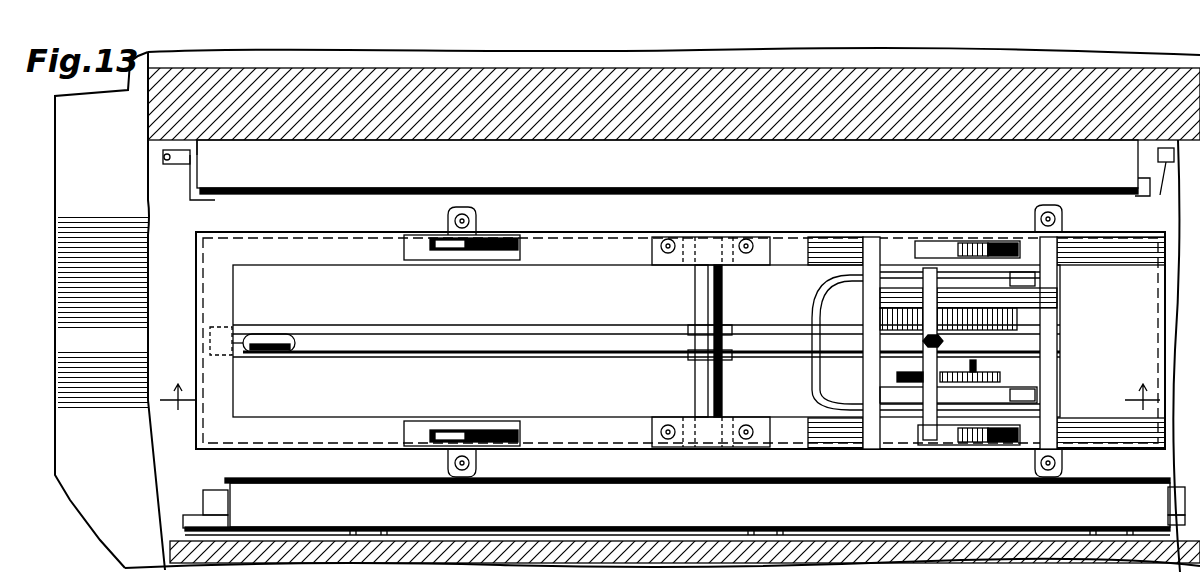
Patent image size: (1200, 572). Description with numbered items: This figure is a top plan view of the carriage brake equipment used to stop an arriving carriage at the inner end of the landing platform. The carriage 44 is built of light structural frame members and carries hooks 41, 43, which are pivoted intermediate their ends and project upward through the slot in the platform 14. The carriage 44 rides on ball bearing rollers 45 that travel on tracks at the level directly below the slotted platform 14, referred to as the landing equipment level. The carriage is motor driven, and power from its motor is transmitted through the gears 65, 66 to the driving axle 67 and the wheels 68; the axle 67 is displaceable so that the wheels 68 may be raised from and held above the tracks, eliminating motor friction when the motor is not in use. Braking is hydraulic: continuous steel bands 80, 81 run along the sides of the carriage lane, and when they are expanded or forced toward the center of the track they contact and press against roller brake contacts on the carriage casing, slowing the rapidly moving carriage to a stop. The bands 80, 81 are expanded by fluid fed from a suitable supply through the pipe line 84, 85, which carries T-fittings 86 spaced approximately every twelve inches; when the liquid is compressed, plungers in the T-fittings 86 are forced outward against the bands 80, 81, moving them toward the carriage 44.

The platform 14 is at (660, 384).
The hook 41 is at (268, 340).
The hook 43 is at (727, 303).
The carriage 44 is at (357, 257).
The ball bearing rollers 45 is at (487, 258).
The gear 65 is at (1000, 382).
The gear 66 is at (897, 377).
The driving axle 67 is at (976, 366).
The wheels 68 is at (922, 450).
The steel band 80 is at (190, 488).
The steel band 81 is at (1115, 204).
The pipe line 84 is at (178, 168).
The pipe line 85 is at (1162, 182).
The T-fittings 86 is at (930, 248).